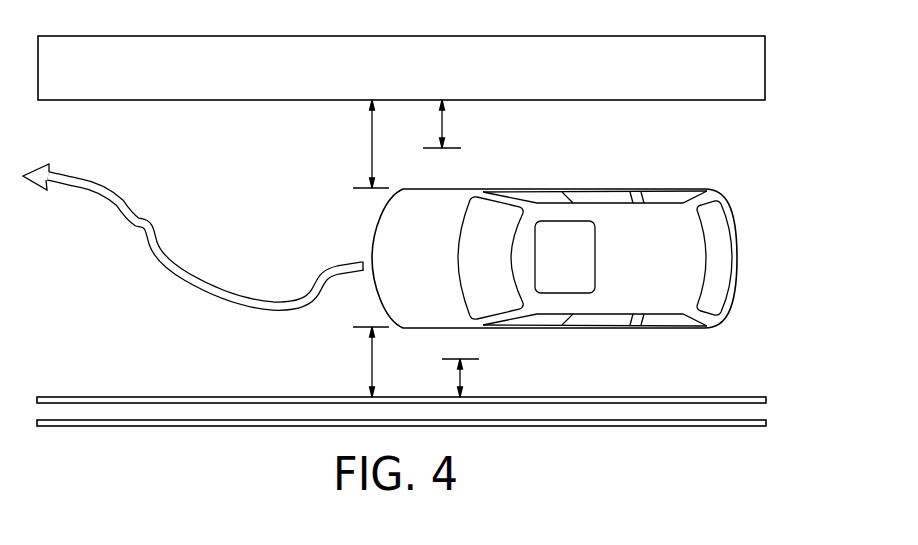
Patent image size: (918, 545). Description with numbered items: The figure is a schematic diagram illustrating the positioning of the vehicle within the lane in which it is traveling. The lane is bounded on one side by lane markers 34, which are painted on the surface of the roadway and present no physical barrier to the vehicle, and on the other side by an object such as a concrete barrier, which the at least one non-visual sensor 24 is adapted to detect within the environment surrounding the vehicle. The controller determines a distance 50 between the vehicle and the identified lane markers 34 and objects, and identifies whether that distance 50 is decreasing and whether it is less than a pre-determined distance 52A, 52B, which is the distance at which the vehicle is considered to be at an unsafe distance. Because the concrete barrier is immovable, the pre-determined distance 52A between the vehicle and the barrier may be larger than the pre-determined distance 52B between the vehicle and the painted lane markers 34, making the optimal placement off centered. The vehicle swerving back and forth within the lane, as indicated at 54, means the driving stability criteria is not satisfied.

The non-visual sensor 24 is at (657, 80).
The lane markers 34 is at (675, 399).
The distance 50 is at (372, 144).
The pre-determined distance 52A is at (443, 124).
The pre-determined distance 52B is at (462, 378).
The swerving 54 is at (175, 284).